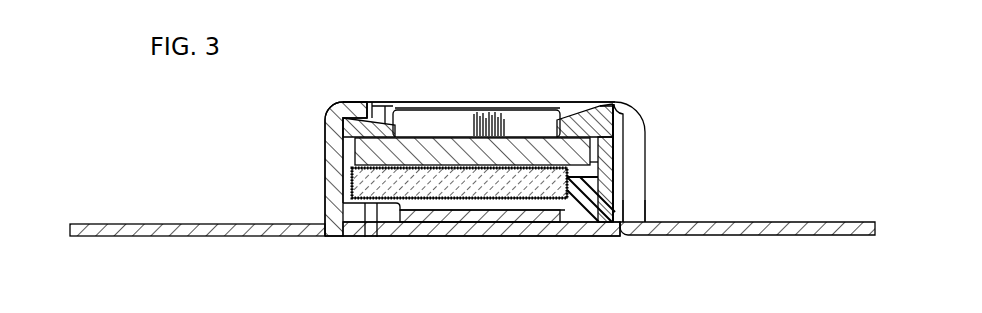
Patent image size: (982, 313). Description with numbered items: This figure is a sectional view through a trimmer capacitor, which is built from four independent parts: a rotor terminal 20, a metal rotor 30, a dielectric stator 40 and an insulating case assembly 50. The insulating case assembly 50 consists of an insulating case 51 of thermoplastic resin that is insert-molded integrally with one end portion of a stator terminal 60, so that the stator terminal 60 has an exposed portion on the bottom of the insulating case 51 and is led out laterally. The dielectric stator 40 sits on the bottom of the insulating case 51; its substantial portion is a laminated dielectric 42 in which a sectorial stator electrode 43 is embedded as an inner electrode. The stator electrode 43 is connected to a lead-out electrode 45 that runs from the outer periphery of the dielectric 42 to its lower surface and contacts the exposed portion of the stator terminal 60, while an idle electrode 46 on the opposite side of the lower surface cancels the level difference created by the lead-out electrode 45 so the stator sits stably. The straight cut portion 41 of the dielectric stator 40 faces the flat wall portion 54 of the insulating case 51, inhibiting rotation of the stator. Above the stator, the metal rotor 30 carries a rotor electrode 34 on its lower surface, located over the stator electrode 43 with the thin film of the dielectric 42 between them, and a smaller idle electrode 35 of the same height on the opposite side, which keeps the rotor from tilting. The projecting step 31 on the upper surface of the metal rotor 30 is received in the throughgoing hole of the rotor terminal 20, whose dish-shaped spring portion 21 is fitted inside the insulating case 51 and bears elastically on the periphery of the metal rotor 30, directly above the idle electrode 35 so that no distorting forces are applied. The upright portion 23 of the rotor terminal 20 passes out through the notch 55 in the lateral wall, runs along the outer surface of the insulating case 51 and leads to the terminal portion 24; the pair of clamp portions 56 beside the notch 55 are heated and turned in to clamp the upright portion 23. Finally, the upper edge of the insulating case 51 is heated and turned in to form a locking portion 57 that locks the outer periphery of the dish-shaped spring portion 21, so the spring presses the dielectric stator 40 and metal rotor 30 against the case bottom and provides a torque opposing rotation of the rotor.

The rotor terminal 20 is at (609, 168).
The dish-shaped spring portion 21 is at (565, 121).
The upright portion 23 is at (630, 192).
The terminal portion 24 is at (787, 222).
The metal rotor 30 is at (515, 103).
The projecting step 31 is at (441, 103).
The rotor electrode 34 is at (345, 140).
The idle electrode 35 is at (612, 109).
The dielectric stator 40 is at (437, 225).
The cut portion 41 is at (600, 159).
The dielectric 42 is at (556, 190).
The stator electrode 43 is at (378, 180).
The lead-out electrode 45 is at (364, 180).
The idle electrode 46 is at (500, 192).
The insulating case assembly 50 is at (316, 161).
The insulating case 51 is at (323, 165).
The flat wall portion 54 is at (603, 223).
The notch 55 is at (612, 108).
The clamp portions 56 is at (641, 148).
The locking portion 57 is at (372, 102).
The stator terminal 60 is at (186, 224).